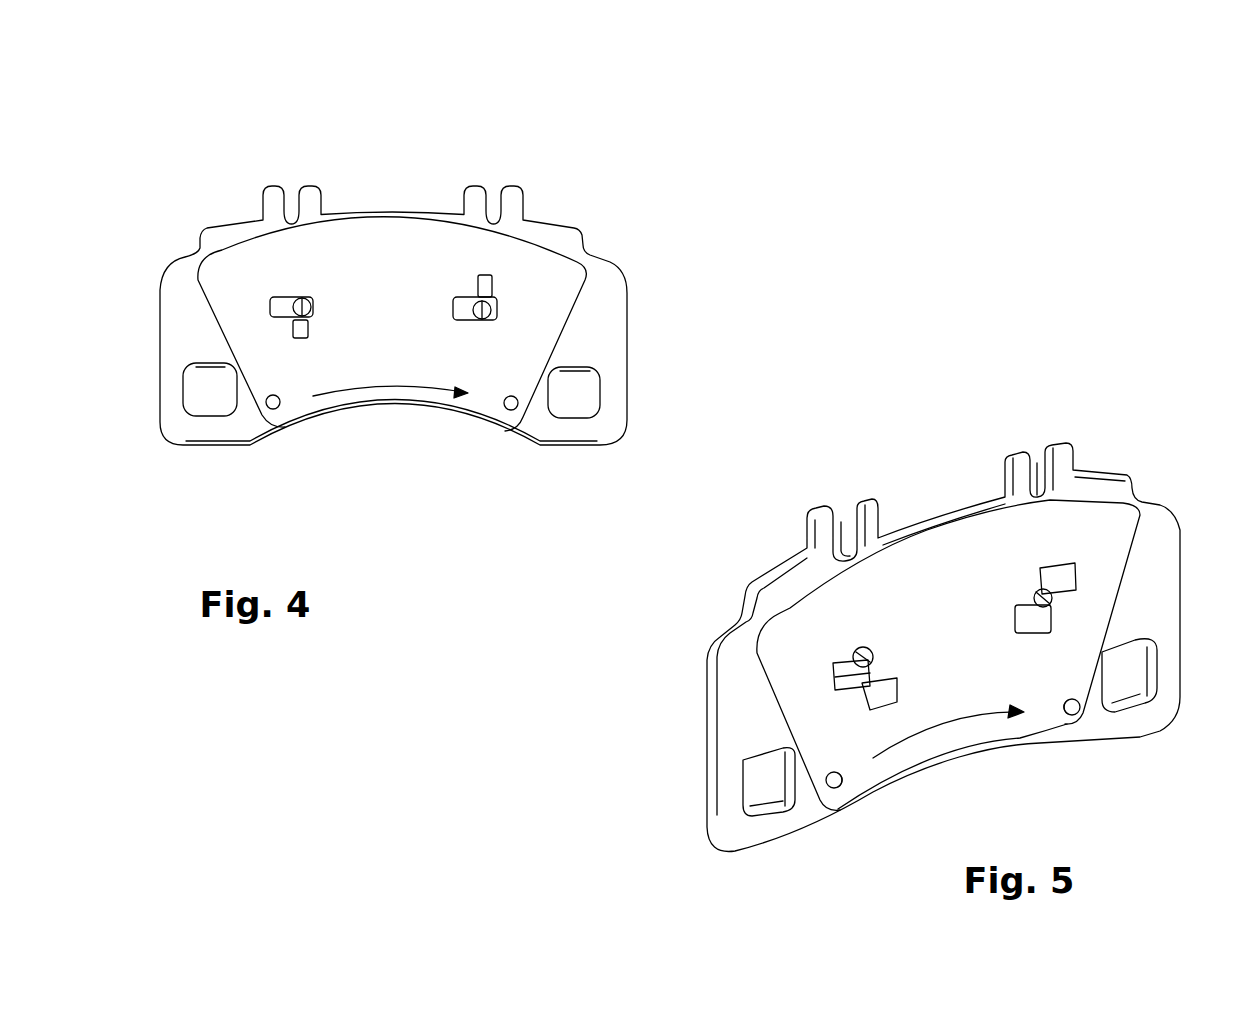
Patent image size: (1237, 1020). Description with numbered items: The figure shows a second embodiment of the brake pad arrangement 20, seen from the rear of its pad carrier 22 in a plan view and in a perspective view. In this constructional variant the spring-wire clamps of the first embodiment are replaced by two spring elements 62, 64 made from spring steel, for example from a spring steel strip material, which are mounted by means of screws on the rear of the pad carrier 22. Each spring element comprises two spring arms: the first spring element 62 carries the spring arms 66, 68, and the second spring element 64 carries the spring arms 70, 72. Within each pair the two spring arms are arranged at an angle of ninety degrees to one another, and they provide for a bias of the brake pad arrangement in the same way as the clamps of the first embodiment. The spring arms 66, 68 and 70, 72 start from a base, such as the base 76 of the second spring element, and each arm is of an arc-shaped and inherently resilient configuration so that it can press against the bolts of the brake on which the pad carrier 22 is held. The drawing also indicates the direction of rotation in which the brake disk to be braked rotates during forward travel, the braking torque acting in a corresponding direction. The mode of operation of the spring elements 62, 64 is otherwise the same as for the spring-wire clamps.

In FIG. 4, the brake pad arrangement 20 is at (410, 245).
In FIG. 5, the brake pad arrangement 20 is at (959, 574).
In FIG. 4, the pad carrier 22 is at (612, 290).
In FIG. 5, the pad carrier 22 is at (1160, 542).
In FIG. 4, the spring element 62 is at (263, 306).
In FIG. 4, the spring element 64 is at (451, 303).
In FIG. 4, the spring arm 66 is at (270, 298).
In FIG. 5, the spring arm 66 is at (843, 677).
In FIG. 4, the spring arm 68 is at (293, 340).
In FIG. 5, the spring arm 68 is at (878, 710).
In FIG. 4, the spring arm 70 is at (481, 277).
In FIG. 5, the spring arm 70 is at (1052, 578).
In FIG. 4, the spring arm 72 is at (455, 318).
In FIG. 5, the spring arm 72 is at (1030, 620).
In FIG. 5, the base 76 is at (1037, 587).